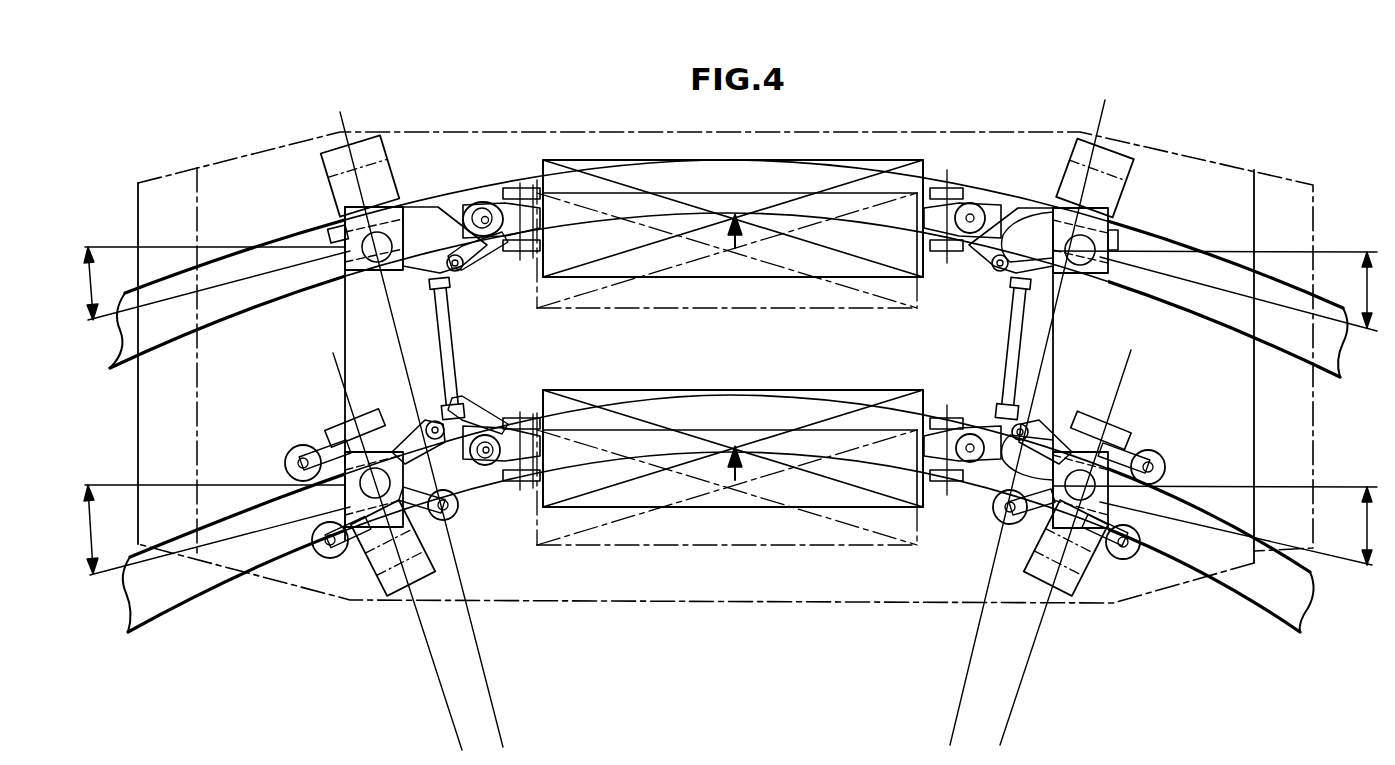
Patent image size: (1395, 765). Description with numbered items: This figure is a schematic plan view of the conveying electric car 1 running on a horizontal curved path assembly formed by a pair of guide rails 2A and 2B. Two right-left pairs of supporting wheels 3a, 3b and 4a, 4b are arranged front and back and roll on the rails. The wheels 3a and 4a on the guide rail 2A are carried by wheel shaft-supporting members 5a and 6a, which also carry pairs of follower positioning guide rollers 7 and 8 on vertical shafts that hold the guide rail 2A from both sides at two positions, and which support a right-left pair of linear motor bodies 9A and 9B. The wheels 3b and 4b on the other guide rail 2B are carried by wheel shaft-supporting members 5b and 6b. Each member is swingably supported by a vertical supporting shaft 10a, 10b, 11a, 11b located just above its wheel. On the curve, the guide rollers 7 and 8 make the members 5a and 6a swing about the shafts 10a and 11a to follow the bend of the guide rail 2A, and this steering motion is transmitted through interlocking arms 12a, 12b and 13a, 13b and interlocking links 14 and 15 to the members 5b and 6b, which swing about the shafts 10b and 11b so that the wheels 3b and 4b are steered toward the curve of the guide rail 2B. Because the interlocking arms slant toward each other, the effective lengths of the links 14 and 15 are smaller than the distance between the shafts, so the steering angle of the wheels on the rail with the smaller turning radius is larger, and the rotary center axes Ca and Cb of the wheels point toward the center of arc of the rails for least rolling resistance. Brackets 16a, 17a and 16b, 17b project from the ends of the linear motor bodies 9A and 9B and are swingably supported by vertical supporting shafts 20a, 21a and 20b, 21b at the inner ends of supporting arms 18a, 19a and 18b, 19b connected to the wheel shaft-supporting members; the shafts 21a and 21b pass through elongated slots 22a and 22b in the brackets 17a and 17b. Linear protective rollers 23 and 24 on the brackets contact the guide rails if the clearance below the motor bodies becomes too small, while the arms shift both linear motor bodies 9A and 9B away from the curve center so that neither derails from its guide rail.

The conveying electric car 1 is at (689, 606).
The guide rail 2A is at (1268, 587).
The guide rail 2B is at (1163, 243).
The supporting wheel 3a is at (1160, 520).
The supporting wheel 3b is at (1135, 258).
The supporting wheel 4a is at (300, 530).
The supporting wheel 4b is at (340, 247).
The wheel shaft-supporting member 5a is at (1083, 572).
The wheel shaft-supporting member 5b is at (1075, 185).
The wheel shaft-supporting member 6a is at (395, 578).
The wheel shaft-supporting member 6b is at (377, 177).
The follower positioning guide rollers 7 is at (1065, 408).
The follower positioning guide rollers 8 is at (414, 408).
The linear motor body 9A is at (740, 500).
The linear motor body 9B is at (743, 263).
The vertical supporting shaft 10a is at (1117, 433).
The vertical supporting shaft 10b is at (1118, 232).
The vertical supporting shaft 11a is at (343, 437).
The vertical supporting shaft 11b is at (343, 262).
The interlocking arm 12a is at (1010, 478).
The interlocking arm 12b is at (1018, 230).
The interlocking arm 13a is at (442, 418).
The interlocking arm 13b is at (440, 208).
The interlocking link 14 is at (1015, 363).
The interlocking link 15 is at (440, 322).
The bracket 16a is at (933, 448).
The bracket 16b is at (933, 222).
The bracket 17a is at (573, 443).
The bracket 17b is at (530, 220).
The supporting arm 18a is at (973, 434).
The supporting arm 18b is at (997, 208).
The supporting arm 19a is at (460, 468).
The supporting arm 19b is at (470, 202).
The vertical supporting shaft 20a is at (1010, 430).
The vertical supporting shaft 20b is at (985, 256).
The vertical supporting shaft 21a is at (482, 426).
The vertical supporting shaft 21b is at (478, 248).
The elongated slot 22a is at (580, 460).
The elongated slot 22b is at (530, 188).
The linear protective rollers 23 is at (527, 420).
The linear protective rollers 24 is at (540, 192).
The rotary center axis Ca is at (732, 550).
The rotary center axis Cb is at (722, 423).